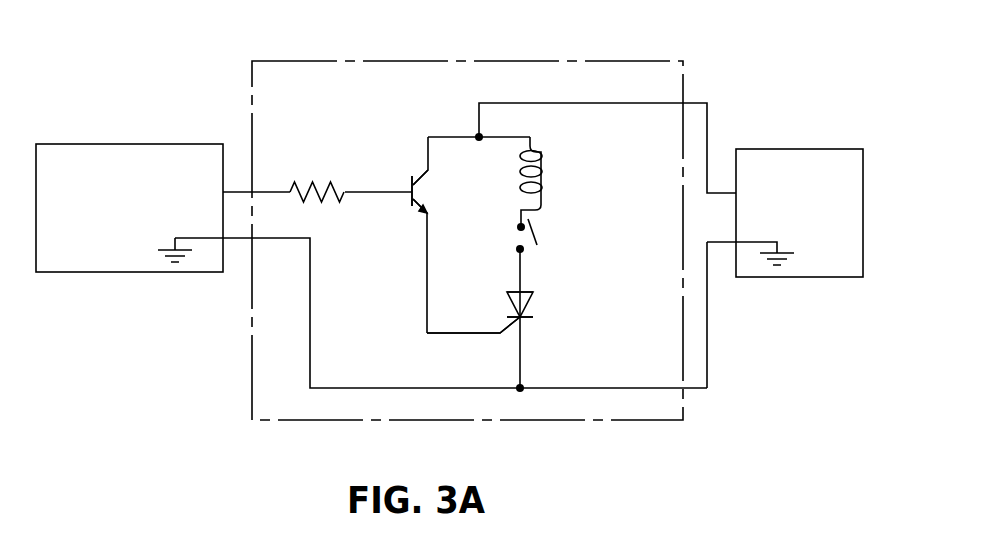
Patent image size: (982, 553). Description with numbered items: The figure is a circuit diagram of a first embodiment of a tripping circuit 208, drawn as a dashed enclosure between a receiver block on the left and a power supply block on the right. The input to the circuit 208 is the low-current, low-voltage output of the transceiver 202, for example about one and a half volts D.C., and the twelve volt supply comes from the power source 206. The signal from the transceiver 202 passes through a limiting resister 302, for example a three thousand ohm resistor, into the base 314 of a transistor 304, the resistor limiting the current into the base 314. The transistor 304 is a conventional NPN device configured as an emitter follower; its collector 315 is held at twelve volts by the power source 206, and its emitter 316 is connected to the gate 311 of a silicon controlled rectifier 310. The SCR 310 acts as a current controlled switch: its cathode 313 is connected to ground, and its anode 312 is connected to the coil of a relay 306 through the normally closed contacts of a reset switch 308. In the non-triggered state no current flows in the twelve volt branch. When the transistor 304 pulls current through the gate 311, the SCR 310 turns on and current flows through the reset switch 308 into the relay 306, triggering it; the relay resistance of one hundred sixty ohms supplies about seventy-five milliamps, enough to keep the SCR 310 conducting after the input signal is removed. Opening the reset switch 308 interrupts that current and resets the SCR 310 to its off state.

The transceiver 202 is at (125, 144).
The power source 206 is at (805, 149).
The circuit 208 is at (405, 61).
The limiting resister 302 is at (322, 180).
The transistor 304 is at (424, 192).
The relay 306 is at (543, 163).
The switch 308 is at (534, 238).
The silicon controlled rectifier 310 is at (502, 288).
The gate 311 is at (490, 334).
The anode 312 is at (518, 292).
The cathode 313 is at (522, 317).
The base 314 is at (411, 203).
The collector 315 is at (420, 176).
The emitter 316 is at (420, 216).